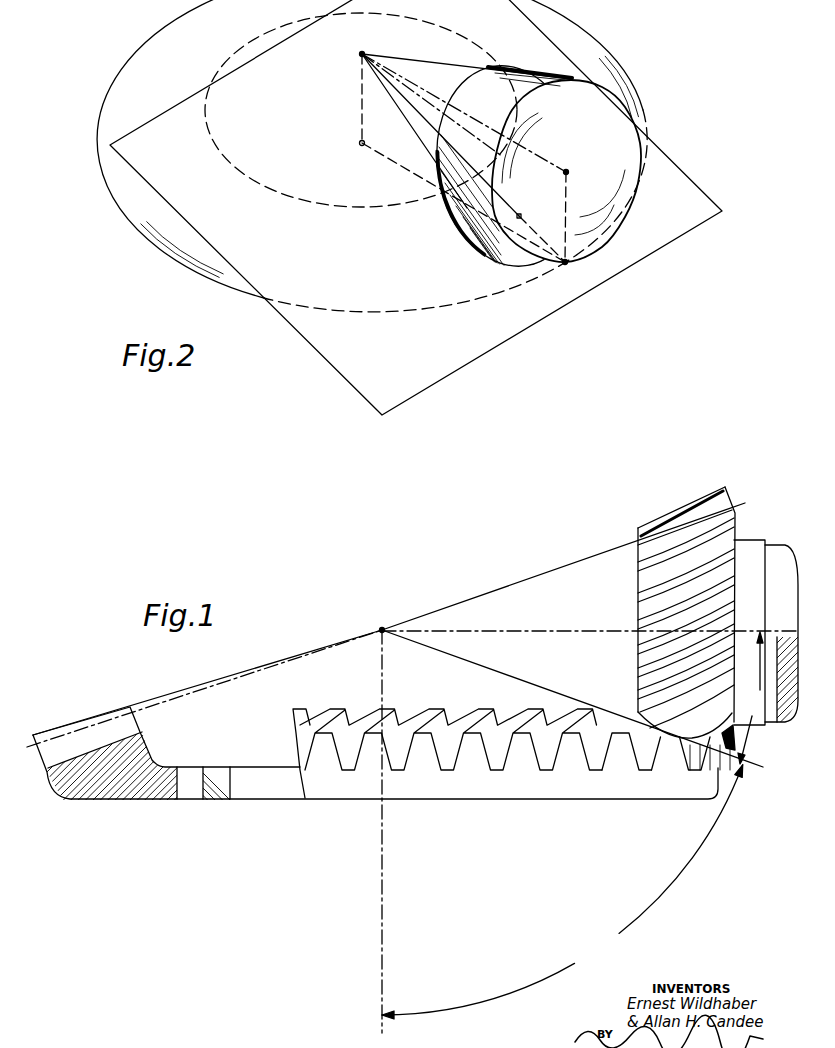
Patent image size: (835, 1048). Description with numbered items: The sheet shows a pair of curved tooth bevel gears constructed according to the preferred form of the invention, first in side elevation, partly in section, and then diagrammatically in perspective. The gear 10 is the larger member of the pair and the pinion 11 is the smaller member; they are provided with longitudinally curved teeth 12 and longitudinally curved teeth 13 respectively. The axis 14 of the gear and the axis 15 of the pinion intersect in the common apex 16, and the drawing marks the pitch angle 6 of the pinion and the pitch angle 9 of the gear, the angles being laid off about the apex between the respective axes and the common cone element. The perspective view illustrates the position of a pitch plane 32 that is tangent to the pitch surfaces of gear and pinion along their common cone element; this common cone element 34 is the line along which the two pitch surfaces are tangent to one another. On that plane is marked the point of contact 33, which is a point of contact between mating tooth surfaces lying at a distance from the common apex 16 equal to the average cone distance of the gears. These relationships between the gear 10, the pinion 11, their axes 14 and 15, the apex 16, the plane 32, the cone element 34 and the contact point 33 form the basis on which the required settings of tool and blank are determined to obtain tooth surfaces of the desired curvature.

In FIG. 1, the angle between pitch cone axis and cutter axis 6 is at (562, 892).
In FIG. 1, the angle of inclination of cutter axis 9 is at (753, 698).
In FIG. 2, the gear 10 is at (572, 47).
In FIG. 1, the gear 10 is at (486, 793).
In FIG. 2, the pinion 11 is at (572, 79).
In FIG. 1, the pinion 11 is at (737, 538).
In FIG. 1, the longitudinally curved teeth 12 is at (494, 723).
In FIG. 2, the longitudinally curved teeth 13 is at (364, 53).
In FIG. 1, the longitudinally curved teeth 13 is at (665, 518).
In FIG. 2, the axis 14 is at (361, 98).
In FIG. 1, the axis 14 is at (384, 818).
In FIG. 2, the axis 15 is at (546, 162).
In FIG. 1, the axis 15 is at (738, 632).
In FIG. 1, the common apex 16 is at (383, 628).
In FIG. 2, the pitch plane 32 is at (672, 181).
In FIG. 2, the point of contact 33 is at (522, 216).
In FIG. 2, the common cone element 34 is at (506, 204).